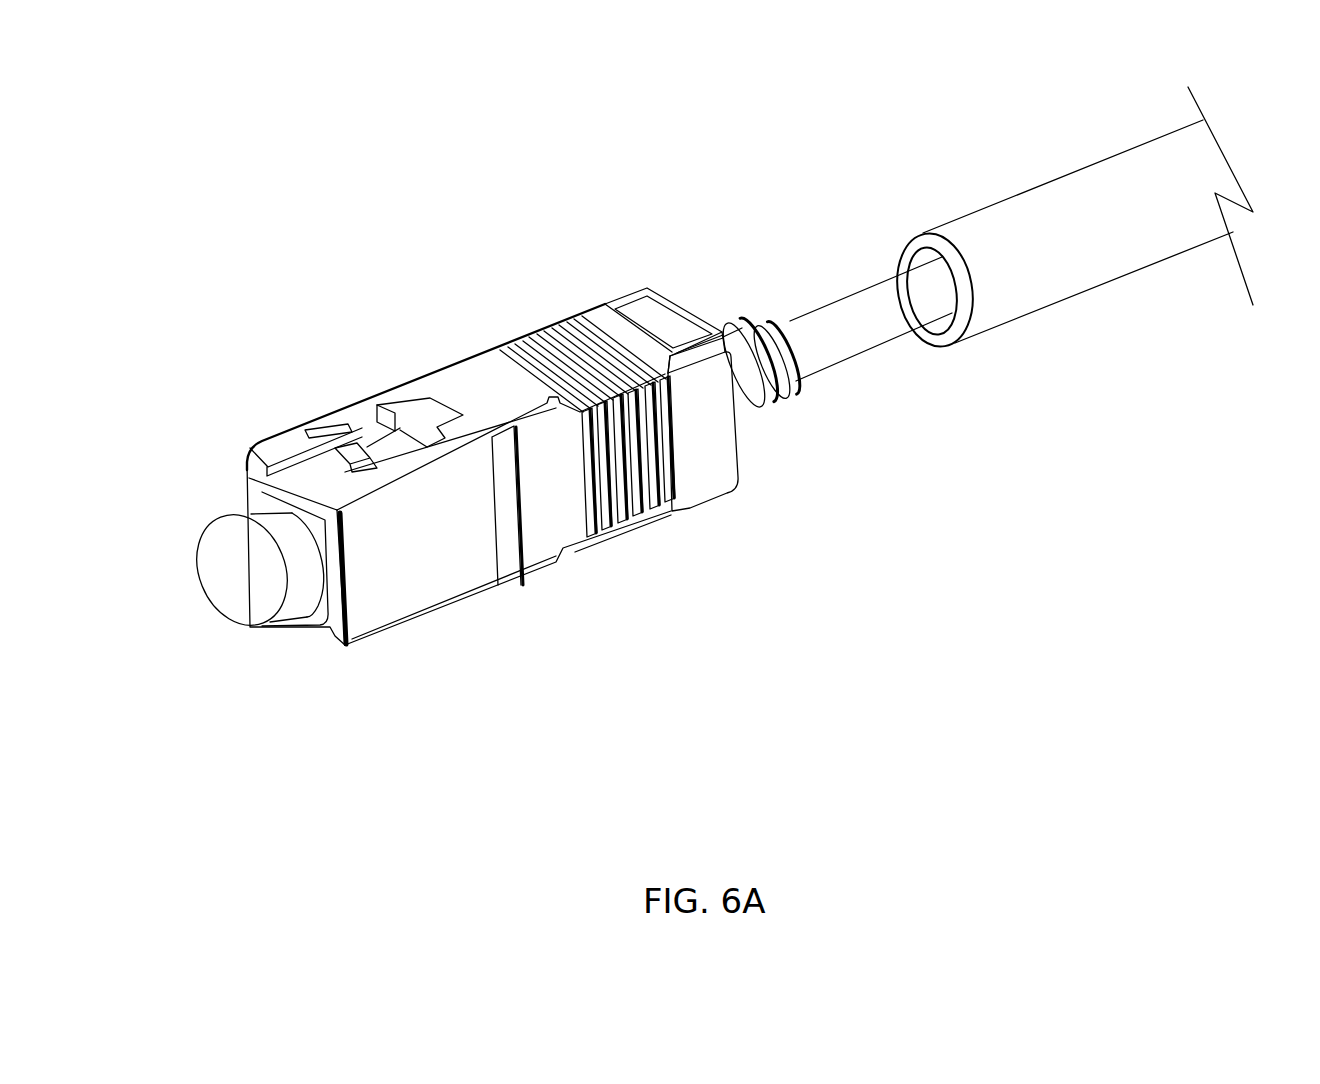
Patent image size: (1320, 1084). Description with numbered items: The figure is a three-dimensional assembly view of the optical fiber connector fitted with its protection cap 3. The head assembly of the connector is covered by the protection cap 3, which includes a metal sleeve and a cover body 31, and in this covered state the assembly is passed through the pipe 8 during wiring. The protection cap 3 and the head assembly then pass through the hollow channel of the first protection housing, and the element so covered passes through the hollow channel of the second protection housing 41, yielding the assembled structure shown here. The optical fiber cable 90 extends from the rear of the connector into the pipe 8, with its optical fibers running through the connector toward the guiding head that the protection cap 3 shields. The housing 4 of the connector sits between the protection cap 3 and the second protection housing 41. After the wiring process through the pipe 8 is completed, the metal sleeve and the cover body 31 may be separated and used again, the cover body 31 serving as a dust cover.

The protection cap 3 is at (205, 539).
The cover body 31 is at (253, 606).
The connector housing 4 is at (356, 321).
The second protection housing 41 is at (702, 475).
The optical fiber cable 90 is at (862, 343).
The pipe 8 is at (1083, 268).